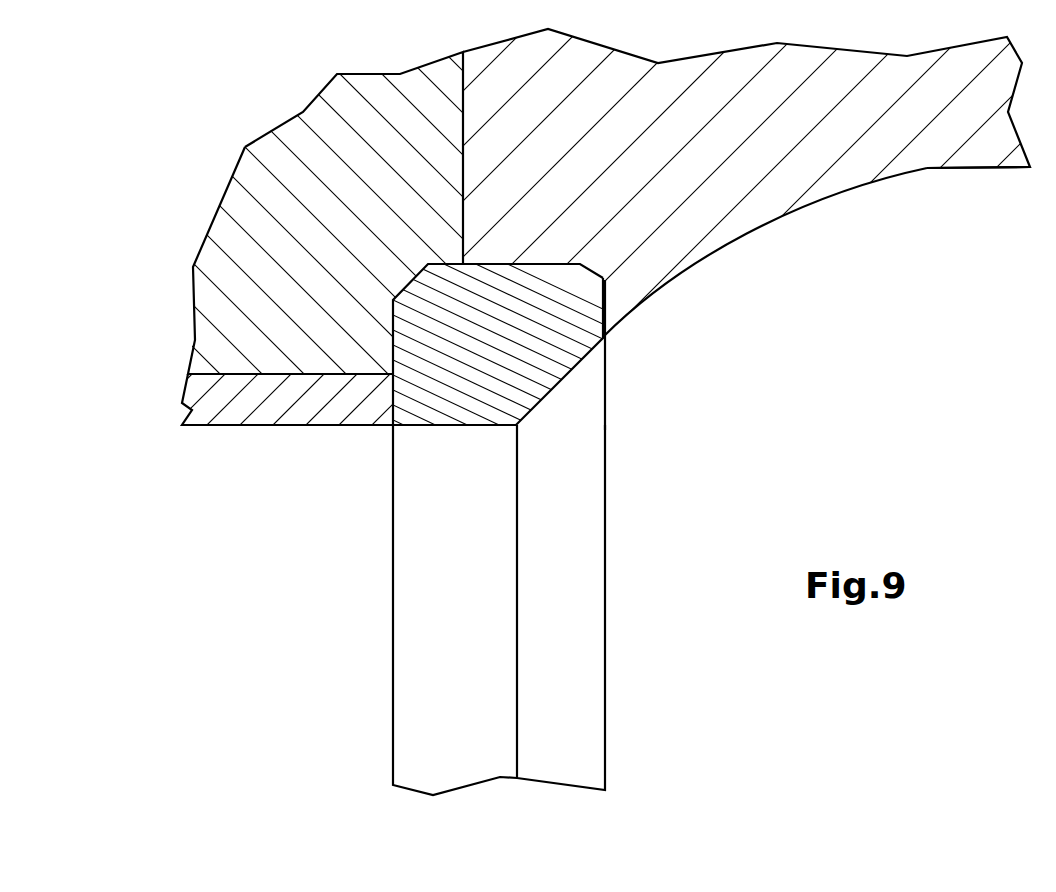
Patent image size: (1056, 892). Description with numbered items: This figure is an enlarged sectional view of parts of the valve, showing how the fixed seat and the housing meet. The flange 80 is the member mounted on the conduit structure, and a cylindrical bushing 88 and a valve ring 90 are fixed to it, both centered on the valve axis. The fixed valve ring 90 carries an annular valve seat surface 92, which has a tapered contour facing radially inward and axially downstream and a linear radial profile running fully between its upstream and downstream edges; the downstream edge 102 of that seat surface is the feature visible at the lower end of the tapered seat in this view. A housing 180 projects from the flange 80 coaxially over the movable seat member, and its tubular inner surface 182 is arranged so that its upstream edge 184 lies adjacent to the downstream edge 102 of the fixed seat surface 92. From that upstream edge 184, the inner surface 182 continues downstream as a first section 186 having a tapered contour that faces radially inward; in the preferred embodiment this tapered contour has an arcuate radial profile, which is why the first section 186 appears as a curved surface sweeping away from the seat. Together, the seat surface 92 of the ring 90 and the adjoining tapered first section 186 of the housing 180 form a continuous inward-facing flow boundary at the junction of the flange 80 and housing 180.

The flange 80 is at (340, 137).
The housing 180 is at (632, 120).
The cylindrical bushing 88 is at (277, 374).
The valve ring 90 is at (427, 310).
The upstream edge 184 is at (605, 337).
The first section 186 is at (760, 225).
The tubular inner surface 182 is at (931, 180).
The annular valve seat surface 92 is at (558, 572).
The downstream edge 102 is at (605, 437).